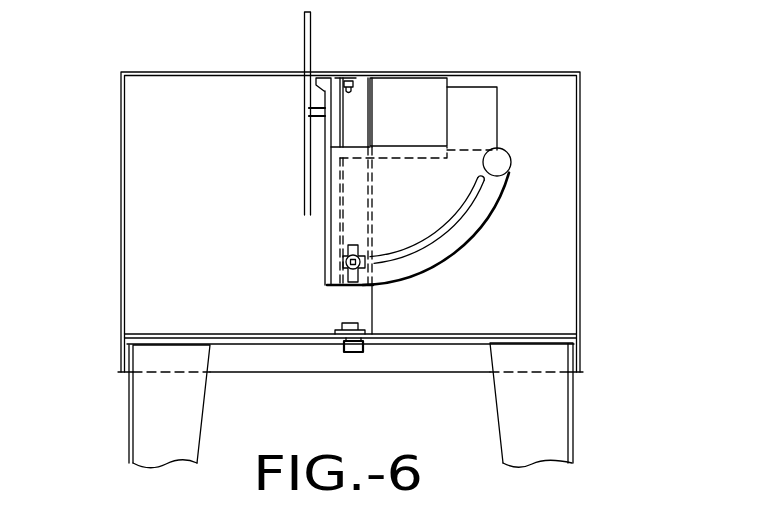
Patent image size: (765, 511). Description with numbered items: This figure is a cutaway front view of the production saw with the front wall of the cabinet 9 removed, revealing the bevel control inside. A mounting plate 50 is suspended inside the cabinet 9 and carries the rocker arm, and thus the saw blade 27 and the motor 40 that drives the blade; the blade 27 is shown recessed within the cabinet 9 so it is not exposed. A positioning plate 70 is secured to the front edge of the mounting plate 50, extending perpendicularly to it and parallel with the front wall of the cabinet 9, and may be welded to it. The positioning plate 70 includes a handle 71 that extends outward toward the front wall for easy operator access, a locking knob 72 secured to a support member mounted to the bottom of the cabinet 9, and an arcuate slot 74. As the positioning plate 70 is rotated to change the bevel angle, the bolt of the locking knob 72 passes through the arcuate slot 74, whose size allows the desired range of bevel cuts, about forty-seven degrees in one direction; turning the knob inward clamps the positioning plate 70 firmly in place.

The cabinet 9 is at (121, 150).
The saw blade 27 is at (304, 97).
The motor 40 is at (483, 117).
The mounting plate 50 is at (332, 197).
The positioning plate 70 is at (428, 187).
The handle 71 is at (498, 162).
The locking knob 72 is at (353, 285).
The arcuate slot 74 is at (440, 228).